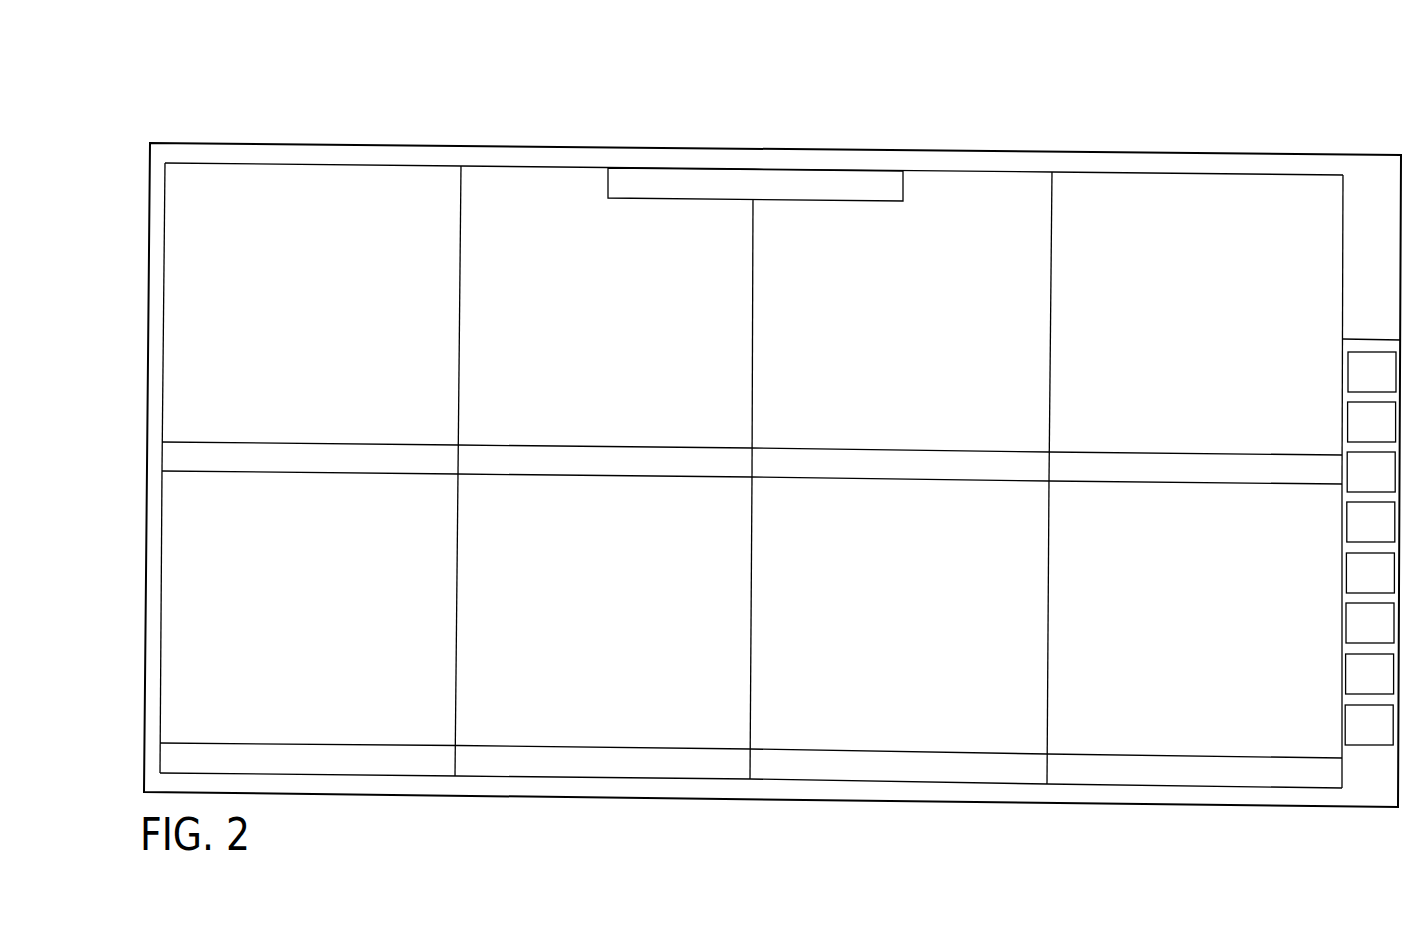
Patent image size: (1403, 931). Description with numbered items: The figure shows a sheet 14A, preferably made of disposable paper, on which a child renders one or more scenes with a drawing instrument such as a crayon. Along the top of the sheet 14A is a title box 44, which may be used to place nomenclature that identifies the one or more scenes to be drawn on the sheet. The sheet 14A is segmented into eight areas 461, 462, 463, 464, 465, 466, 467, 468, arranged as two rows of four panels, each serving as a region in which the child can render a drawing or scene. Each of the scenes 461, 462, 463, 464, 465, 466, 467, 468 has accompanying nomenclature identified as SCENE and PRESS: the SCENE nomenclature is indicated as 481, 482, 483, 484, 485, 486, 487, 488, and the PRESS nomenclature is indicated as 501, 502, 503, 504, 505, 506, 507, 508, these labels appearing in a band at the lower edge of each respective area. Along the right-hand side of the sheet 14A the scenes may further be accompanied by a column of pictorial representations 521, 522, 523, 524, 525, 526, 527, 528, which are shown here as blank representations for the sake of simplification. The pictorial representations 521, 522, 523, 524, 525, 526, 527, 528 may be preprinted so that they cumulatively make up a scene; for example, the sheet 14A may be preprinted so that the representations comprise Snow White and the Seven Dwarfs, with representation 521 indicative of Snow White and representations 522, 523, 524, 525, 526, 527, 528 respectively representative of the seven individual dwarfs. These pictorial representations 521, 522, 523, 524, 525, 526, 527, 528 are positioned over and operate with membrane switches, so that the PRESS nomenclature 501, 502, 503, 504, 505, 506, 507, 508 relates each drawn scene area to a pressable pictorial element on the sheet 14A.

The sheet 14A is at (990, 134).
The title box 44 is at (643, 200).
The area 461 is at (338, 196).
The area 462 is at (538, 186).
The area 463 is at (848, 218).
The area 464 is at (1190, 198).
The area 465 is at (190, 522).
The area 466 is at (557, 505).
The area 467 is at (846, 497).
The area 468 is at (1152, 507).
The SCENE nomenclature 481 is at (202, 445).
The SCENE nomenclature 482 is at (500, 448).
The SCENE nomenclature 483 is at (783, 450).
The SCENE nomenclature 484 is at (1080, 452).
The SCENE nomenclature 485 is at (200, 746).
The SCENE nomenclature 486 is at (500, 749).
The SCENE nomenclature 487 is at (798, 752).
The SCENE nomenclature 488 is at (1088, 757).
The PRESS nomenclature 501 is at (298, 447).
The PRESS nomenclature 502 is at (617, 448).
The PRESS nomenclature 503 is at (915, 450).
The PRESS nomenclature 504 is at (1200, 453).
The PRESS nomenclature 505 is at (296, 747).
The PRESS nomenclature 506 is at (598, 749).
The PRESS nomenclature 507 is at (896, 752).
The PRESS nomenclature 508 is at (1182, 757).
The pictorial representation 521 is at (1357, 372).
The pictorial representation 522 is at (1360, 418).
The pictorial representation 523 is at (1352, 483).
The pictorial representation 524 is at (1357, 525).
The pictorial representation 525 is at (1360, 572).
The pictorial representation 526 is at (1361, 623).
The pictorial representation 527 is at (1357, 672).
The pictorial representation 528 is at (1357, 723).